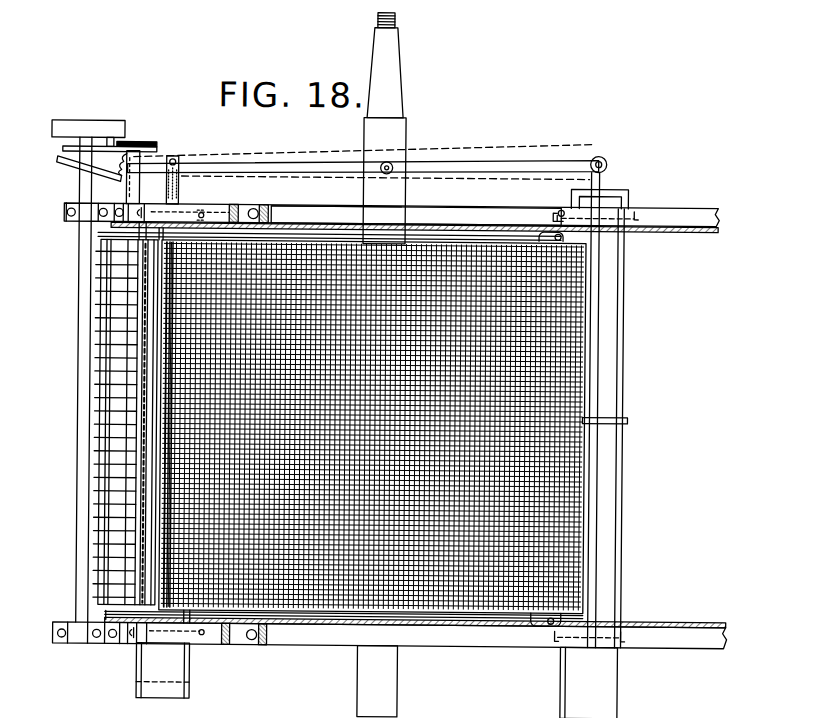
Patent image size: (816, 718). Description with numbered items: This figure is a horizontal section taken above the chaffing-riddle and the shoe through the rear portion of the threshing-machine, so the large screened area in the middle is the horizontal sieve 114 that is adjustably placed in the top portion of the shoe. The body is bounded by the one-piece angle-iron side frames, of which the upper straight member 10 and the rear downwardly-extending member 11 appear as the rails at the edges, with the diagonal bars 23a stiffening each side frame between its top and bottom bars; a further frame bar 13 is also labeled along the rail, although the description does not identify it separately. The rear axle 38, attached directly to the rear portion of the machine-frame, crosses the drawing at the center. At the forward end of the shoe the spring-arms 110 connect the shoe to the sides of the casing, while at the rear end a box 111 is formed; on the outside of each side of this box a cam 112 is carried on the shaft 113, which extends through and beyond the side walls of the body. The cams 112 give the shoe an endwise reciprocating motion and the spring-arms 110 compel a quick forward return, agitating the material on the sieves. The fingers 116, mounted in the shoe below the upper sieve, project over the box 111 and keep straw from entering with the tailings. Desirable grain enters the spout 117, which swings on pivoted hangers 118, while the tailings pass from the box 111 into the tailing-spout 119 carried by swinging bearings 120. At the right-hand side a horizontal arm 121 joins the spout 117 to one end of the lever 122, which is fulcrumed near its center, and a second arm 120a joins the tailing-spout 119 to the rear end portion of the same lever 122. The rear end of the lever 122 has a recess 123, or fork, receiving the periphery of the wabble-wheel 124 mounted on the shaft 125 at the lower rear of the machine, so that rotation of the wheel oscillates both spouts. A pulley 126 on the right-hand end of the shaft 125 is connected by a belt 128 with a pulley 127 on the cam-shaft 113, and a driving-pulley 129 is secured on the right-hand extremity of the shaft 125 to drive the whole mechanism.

The upper straight member 10 is at (338, 644).
The rear downwardly-extending member 11 is at (246, 210).
The bar 13 is at (447, 223).
The diagonal bars 23a is at (285, 209).
The rear axle 38 is at (382, 365).
The spring-arms 110 is at (543, 233).
The box 111 is at (118, 430).
The cam 112 is at (110, 237).
The shaft 113 is at (133, 187).
The horizontal sieve 114 is at (572, 502).
The fingers 116 is at (118, 372).
The spout 117 is at (628, 194).
The pivoted hangers 118 is at (633, 212).
The spout 119 is at (158, 204).
The swinging bearings 120 is at (206, 218).
The second arm 120a is at (215, 203).
The horizontal arm 121 is at (605, 179).
The lever 122 is at (484, 159).
The recess 123 is at (128, 168).
The wabble-wheel 124 is at (66, 171).
The shaft 125 is at (78, 546).
The pulley 126 is at (61, 151).
The pulley 127 is at (143, 143).
The belt 128 is at (110, 141).
The driving-pulley 129 is at (86, 123).